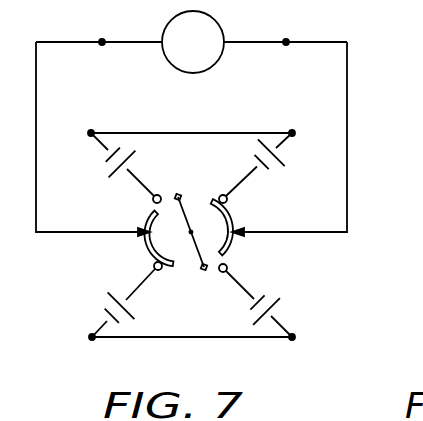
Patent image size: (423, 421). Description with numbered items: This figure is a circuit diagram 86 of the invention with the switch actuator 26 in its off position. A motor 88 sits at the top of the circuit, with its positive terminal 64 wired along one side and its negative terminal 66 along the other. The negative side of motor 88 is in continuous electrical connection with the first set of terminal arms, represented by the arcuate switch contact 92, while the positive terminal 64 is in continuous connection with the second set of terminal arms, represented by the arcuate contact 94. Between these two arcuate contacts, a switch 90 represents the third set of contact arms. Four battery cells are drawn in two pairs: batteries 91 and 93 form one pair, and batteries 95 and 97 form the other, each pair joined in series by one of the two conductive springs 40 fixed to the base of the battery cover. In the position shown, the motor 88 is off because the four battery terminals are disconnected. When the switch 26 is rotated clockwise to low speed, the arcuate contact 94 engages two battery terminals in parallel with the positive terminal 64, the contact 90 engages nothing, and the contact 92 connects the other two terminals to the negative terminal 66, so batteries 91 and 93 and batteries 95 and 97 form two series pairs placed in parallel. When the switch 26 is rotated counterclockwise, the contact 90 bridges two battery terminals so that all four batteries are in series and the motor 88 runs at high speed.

The circuit diagram 86 is at (360, 73).
The positive terminal 64 is at (102, 43).
The negative terminal 66 is at (286, 43).
The motor 88 is at (172, 68).
The conductive springs 40 is at (190, 133).
The switch 90 is at (177, 195).
The battery 91 is at (107, 172).
The battery 93 is at (281, 156).
The battery 95 is at (106, 302).
The battery 97 is at (280, 307).
The arcuate switch contact 92 is at (147, 244).
The arcuate contact 94 is at (235, 221).
The switch actuator 26 is at (260, 255).